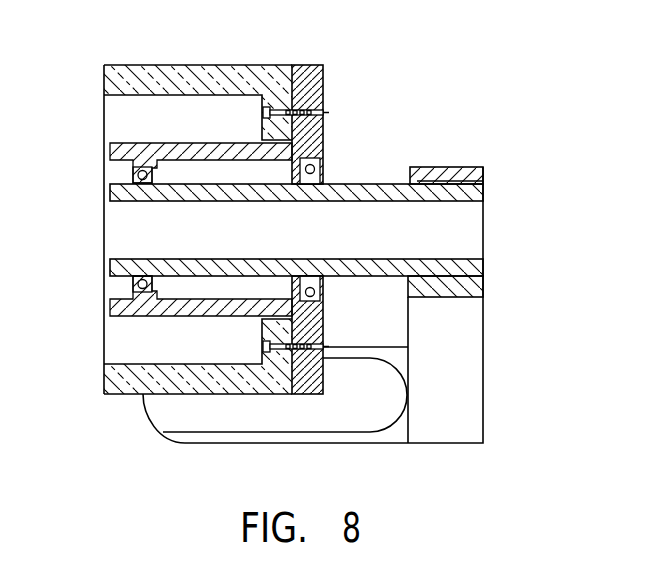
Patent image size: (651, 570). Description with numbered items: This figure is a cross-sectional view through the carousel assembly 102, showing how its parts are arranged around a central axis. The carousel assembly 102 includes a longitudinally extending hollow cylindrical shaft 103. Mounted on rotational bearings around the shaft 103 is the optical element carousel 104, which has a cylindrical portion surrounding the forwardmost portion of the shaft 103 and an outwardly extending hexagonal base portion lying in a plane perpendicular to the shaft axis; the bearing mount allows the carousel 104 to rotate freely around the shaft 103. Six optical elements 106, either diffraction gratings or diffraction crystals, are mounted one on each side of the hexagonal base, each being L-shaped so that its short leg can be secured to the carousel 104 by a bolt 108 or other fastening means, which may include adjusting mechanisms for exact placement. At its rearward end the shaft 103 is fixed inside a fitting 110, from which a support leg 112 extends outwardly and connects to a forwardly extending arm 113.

The carousel assembly 102 is at (500, 144).
The hollow cylindrical shaft 103 is at (147, 258).
The optical element carousel 104 is at (325, 81).
The optical element 106 is at (206, 65).
The bolt 108 is at (326, 113).
The fitting 110 is at (485, 177).
The support leg 112 is at (457, 375).
The forwardly extending arm 113 is at (323, 444).